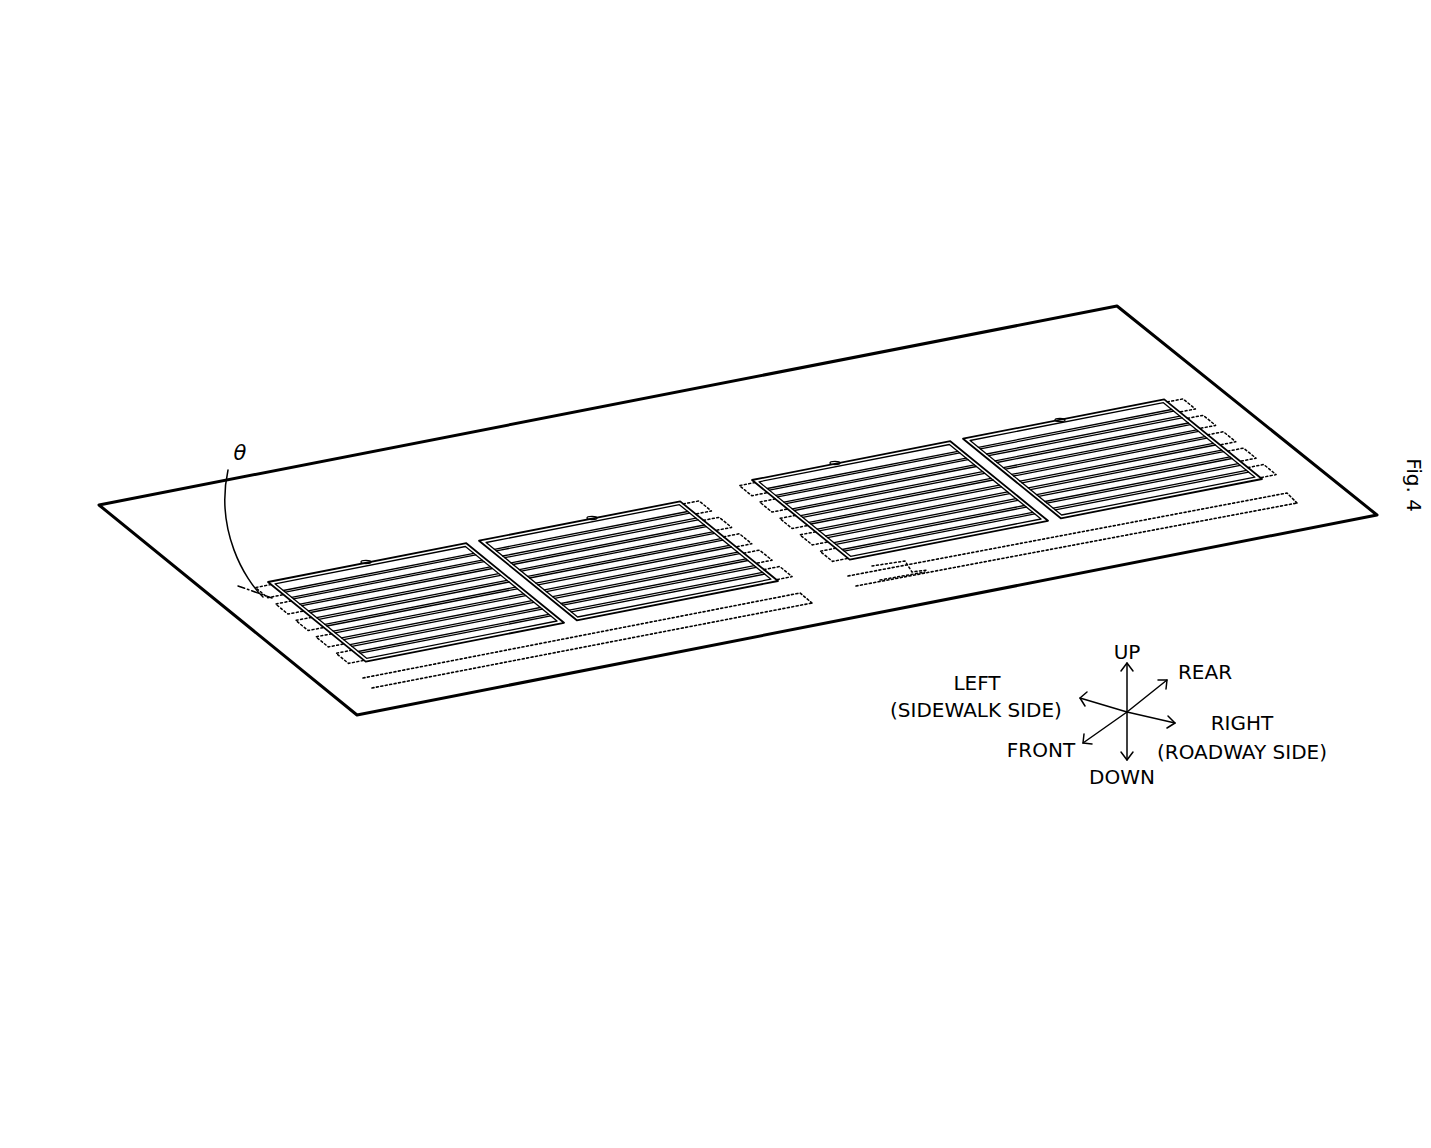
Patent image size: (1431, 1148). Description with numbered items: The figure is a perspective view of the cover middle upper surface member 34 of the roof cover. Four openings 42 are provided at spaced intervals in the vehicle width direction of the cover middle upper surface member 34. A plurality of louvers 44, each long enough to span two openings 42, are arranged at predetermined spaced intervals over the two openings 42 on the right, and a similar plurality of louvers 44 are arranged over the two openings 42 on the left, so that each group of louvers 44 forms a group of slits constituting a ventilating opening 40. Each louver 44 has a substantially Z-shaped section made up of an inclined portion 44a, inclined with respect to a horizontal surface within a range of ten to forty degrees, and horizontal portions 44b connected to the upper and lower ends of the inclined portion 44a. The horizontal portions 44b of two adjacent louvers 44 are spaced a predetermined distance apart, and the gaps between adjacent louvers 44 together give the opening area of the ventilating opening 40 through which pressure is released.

The cover middle upper surface member 34 is at (1072, 330).
The ventilating opening 40 is at (424, 523).
The opening 42 is at (364, 562).
The louver 44 is at (1168, 427).
The inclined portion 44a is at (897, 573).
The horizontal portion 44b is at (855, 578).